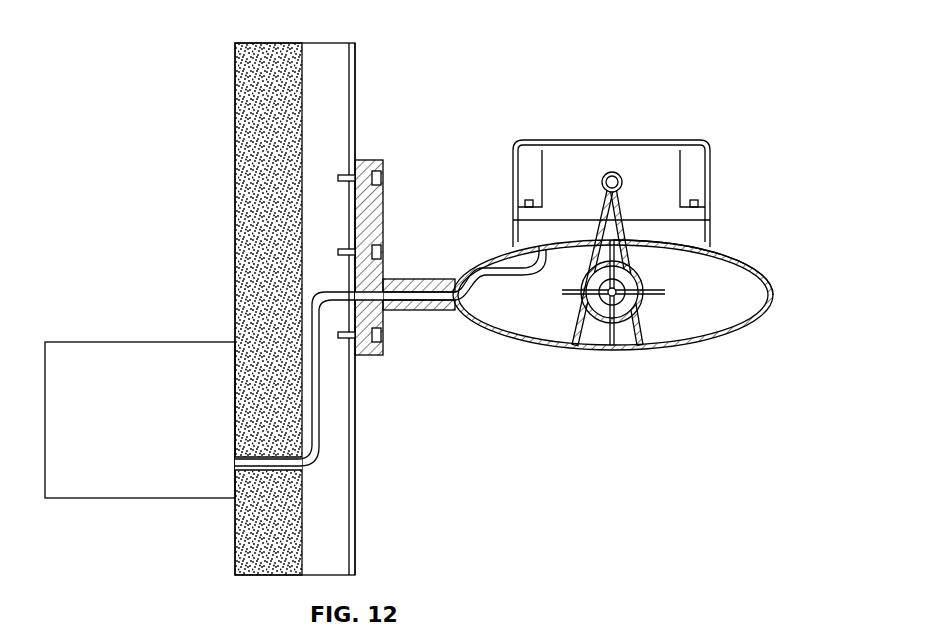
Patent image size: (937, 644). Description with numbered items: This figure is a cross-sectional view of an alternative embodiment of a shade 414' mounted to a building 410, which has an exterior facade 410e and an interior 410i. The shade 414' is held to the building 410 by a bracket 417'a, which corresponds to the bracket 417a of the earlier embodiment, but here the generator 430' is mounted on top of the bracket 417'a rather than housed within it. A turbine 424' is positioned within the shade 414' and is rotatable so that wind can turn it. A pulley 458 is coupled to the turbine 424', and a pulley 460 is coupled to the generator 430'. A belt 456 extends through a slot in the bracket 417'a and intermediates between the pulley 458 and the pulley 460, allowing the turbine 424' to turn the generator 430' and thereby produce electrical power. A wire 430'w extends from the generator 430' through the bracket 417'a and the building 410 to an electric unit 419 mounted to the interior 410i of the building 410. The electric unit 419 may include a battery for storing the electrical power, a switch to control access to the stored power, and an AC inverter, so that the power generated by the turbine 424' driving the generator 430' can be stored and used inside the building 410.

The building 410 is at (253, 292).
The interior 410i is at (245, 97).
The exterior facade 410e is at (340, 89).
The electric unit 419 is at (120, 353).
The bracket 417'a is at (396, 257).
The shade 414' is at (613, 343).
The bracket 417a is at (637, 238).
The wire 430'w is at (390, 358).
The generator 430' is at (611, 164).
The pulley 460 is at (622, 178).
The belt 456 is at (645, 258).
The pulley 458 is at (648, 286).
The turbine 424' is at (691, 323).